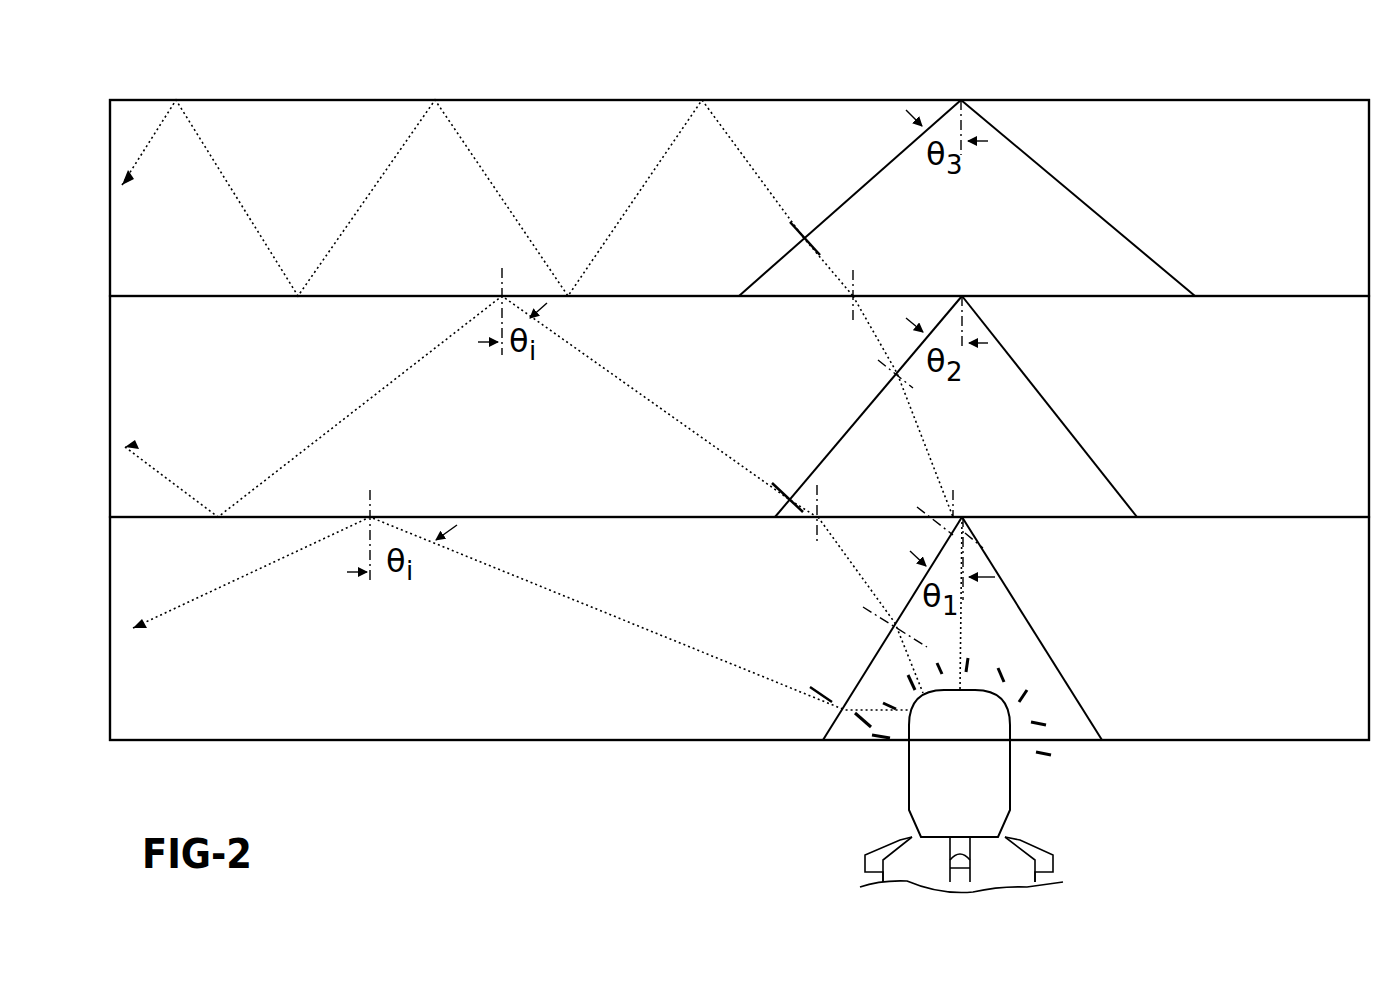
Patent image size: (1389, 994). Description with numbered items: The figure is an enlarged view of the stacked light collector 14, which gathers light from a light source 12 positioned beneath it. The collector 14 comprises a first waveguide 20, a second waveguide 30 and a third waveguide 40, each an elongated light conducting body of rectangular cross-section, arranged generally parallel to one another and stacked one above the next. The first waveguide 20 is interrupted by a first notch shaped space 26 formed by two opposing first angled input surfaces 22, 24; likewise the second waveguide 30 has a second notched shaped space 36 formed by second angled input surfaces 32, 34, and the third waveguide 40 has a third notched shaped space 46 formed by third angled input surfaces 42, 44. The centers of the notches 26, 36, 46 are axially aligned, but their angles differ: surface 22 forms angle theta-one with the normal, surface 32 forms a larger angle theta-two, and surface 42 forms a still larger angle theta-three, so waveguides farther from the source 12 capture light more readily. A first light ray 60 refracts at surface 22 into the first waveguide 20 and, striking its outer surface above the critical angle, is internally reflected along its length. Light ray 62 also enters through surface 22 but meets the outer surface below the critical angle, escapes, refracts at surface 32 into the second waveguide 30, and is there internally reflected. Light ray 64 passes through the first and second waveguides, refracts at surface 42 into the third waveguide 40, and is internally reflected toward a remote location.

The light source 12 is at (1010, 748).
The light collector 14 is at (1036, 73).
The first waveguide 20 is at (279, 633).
The first angled input surface 22 is at (860, 678).
The first angled input surface 24 is at (1098, 733).
The first notch shaped space 26 is at (946, 652).
The second waveguide 30 is at (279, 398).
The second angled input surface 32 is at (836, 447).
The second angled input surface 34 is at (1120, 500).
The second notched shaped space 36 is at (956, 427).
The third waveguide 40 is at (254, 186).
The third angled input surface 42 is at (888, 165).
The third angled input surface 44 is at (1170, 275).
The third notched shaped space 46 is at (967, 219).
The first light ray 60 is at (225, 580).
The light ray 62 is at (178, 488).
The light ray 64 is at (150, 142).